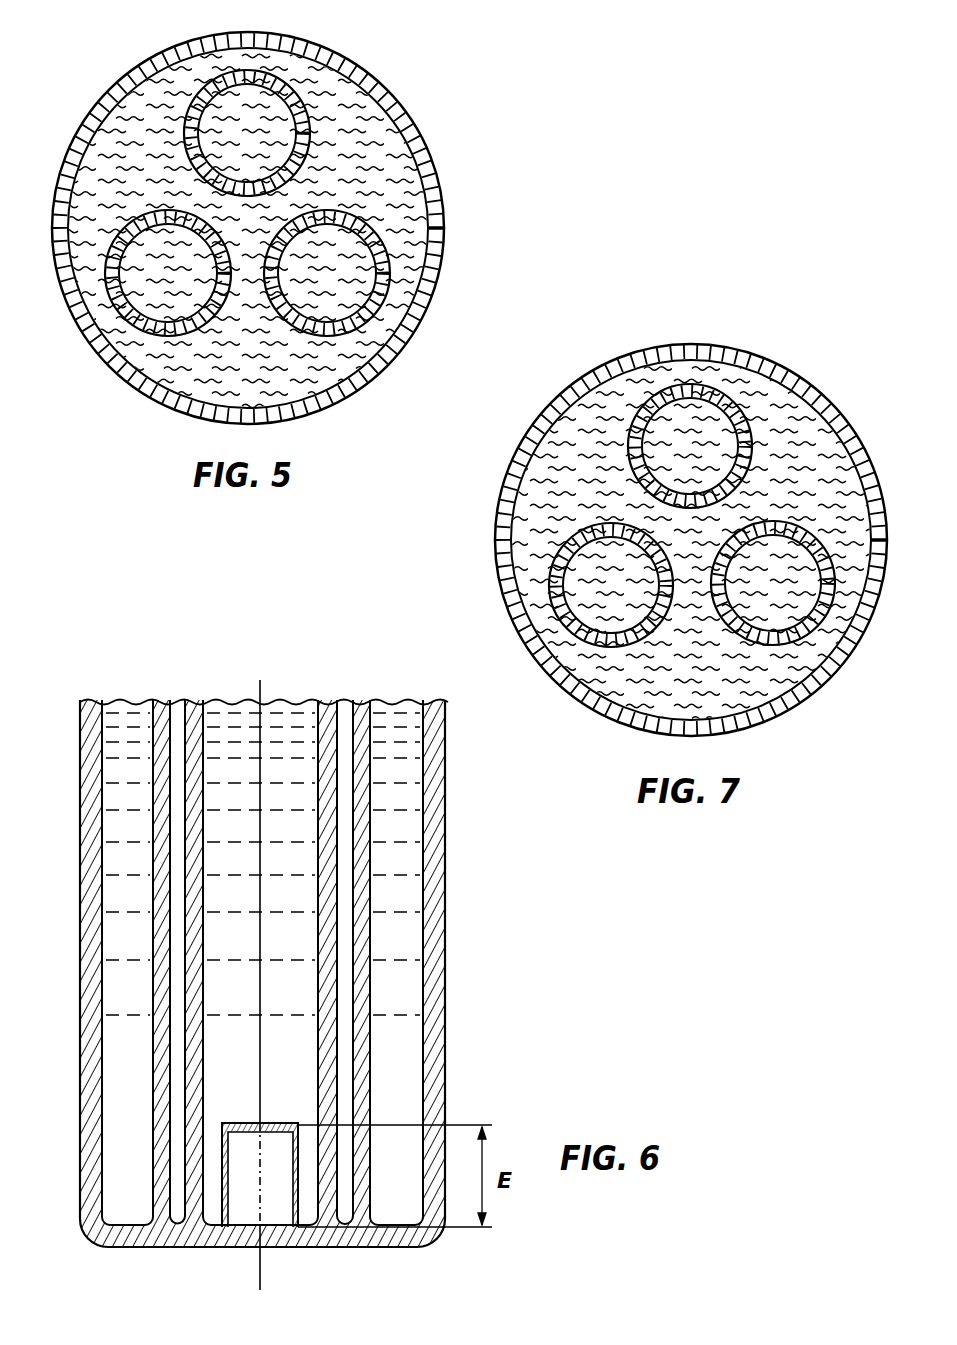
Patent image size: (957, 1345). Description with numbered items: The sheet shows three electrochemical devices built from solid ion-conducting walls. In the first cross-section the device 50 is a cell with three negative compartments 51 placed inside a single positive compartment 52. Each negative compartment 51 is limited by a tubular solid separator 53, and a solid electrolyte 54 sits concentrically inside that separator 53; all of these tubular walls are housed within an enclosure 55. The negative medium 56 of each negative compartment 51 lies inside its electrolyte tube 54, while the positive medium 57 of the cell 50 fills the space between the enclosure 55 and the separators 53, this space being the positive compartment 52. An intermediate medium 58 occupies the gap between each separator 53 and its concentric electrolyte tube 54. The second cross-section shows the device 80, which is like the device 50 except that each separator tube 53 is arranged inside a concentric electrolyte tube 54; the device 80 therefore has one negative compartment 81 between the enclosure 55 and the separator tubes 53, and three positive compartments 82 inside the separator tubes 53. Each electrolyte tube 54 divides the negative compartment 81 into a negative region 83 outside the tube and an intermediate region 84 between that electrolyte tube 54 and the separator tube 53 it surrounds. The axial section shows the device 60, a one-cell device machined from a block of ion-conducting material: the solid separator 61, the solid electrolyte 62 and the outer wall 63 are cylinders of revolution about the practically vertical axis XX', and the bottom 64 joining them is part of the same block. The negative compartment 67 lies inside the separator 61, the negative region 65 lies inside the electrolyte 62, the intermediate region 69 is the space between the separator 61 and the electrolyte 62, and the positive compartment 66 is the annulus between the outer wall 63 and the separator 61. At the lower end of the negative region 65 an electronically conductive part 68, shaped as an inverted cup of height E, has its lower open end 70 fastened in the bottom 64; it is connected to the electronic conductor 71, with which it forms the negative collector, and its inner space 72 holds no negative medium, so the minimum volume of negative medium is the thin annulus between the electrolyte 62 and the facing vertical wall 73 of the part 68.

In FIG. 5, the device 50 is at (413, 77).
In FIG. 5, the negative compartment 51 is at (268, 142).
In FIG. 5, the positive compartment 52 is at (383, 332).
In FIG. 5, the solid separator 53 is at (150, 336).
In FIG. 7, the solid separator 53 is at (737, 430).
In FIG. 5, the solid electrolyte 54 is at (180, 317).
In FIG. 7, the solid electrolyte 54 is at (753, 457).
In FIG. 5, the enclosure 55 is at (360, 378).
In FIG. 7, the enclosure 55 is at (873, 542).
In FIG. 5, the negative medium 56 is at (302, 248).
In FIG. 5, the positive medium 57 is at (403, 238).
In FIG. 5, the intermediate medium 58 is at (315, 326).
In FIG. 6, the device 60 is at (453, 785).
In FIG. 6, the solid separator 61 is at (155, 1205).
In FIG. 6, the solid electrolyte 62 is at (197, 776).
In FIG. 6, the outer wall 63 is at (80, 727).
In FIG. 6, the bottom 64 is at (423, 1235).
In FIG. 6, the negative region 65 is at (282, 995).
In FIG. 6, the positive compartment 66 is at (393, 918).
In FIG. 6, the negative compartment 67 is at (292, 780).
In FIG. 6, the part 68 is at (238, 1123).
In FIG. 6, the intermediate region 69 is at (178, 842).
In FIG. 6, the lower open end 70 is at (310, 1223).
In FIG. 6, the electronic conductor 71 is at (263, 1075).
In FIG. 6, the inner space 72 is at (242, 1162).
In FIG. 6, the wall 73 is at (223, 1137).
In FIG. 7, the device 80 is at (892, 566).
In FIG. 7, the negative compartment 81 is at (850, 575).
In FIG. 7, the positive compartment 82 is at (693, 418).
In FIG. 7, the negative region 83 is at (763, 697).
In FIG. 7, the intermediate region 84 is at (638, 427).